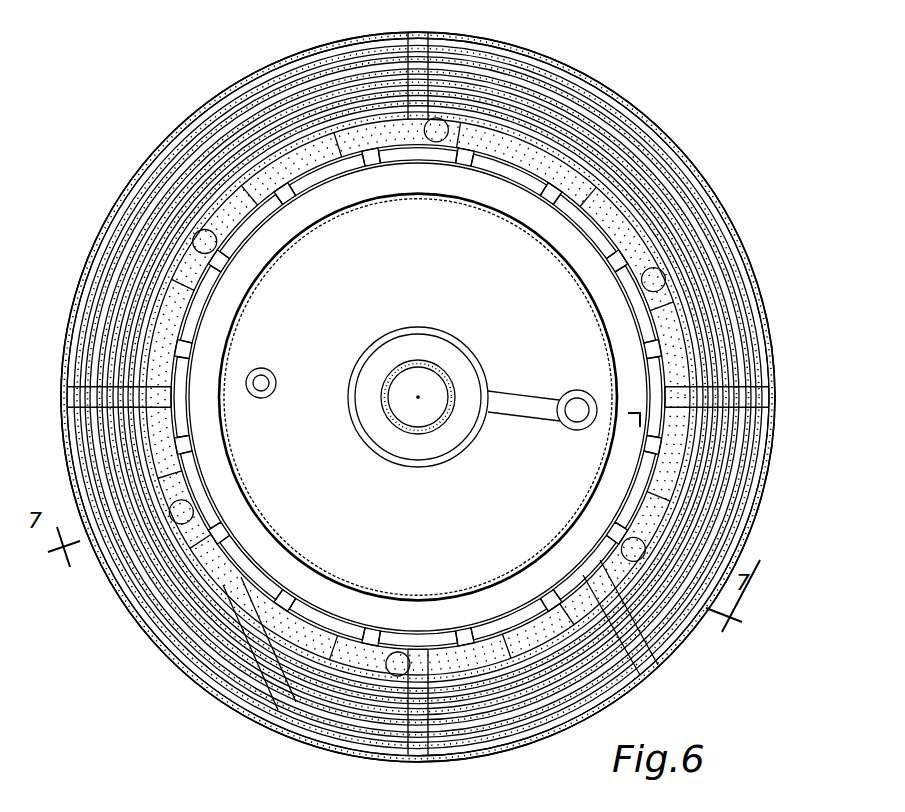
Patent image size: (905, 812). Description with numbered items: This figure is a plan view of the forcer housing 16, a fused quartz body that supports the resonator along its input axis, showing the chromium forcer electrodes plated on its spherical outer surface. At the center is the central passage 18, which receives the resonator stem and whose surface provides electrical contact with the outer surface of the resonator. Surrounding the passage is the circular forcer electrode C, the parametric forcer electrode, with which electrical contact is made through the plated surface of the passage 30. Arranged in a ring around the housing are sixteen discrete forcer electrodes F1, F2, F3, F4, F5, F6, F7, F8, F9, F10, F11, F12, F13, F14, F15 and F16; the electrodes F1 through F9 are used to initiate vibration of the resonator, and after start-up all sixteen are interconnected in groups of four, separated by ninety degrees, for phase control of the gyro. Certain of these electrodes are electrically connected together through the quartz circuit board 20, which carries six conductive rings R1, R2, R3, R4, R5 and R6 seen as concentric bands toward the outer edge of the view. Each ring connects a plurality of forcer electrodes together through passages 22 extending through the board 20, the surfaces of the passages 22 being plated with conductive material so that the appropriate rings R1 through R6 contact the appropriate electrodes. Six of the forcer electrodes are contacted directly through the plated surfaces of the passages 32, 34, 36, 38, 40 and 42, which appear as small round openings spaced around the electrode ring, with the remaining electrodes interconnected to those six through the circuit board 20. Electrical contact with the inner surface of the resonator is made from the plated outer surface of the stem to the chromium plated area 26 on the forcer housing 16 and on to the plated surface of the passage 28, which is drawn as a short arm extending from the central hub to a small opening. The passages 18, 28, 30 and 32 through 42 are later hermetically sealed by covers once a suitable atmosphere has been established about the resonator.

The forcer housing 16 is at (250, 85).
The central passage 18 is at (437, 388).
The quartz circuit board 20 is at (762, 332).
The passages 22 is at (528, 148).
The chromium plated area 26 is at (528, 403).
The passage 28 is at (574, 426).
The passage 30 is at (268, 382).
The passage 32 is at (192, 502).
The passage 34 is at (203, 252).
The passage 36 is at (424, 131).
The passage 38 is at (643, 290).
The passage 40 is at (624, 557).
The passage 42 is at (398, 652).
The circular forcer electrode C is at (400, 183).
The forcer electrode F1 is at (453, 153).
The forcer electrode F2 is at (520, 173).
The forcer electrode F3 is at (577, 227).
The forcer electrode F4 is at (640, 292).
The forcer electrode F5 is at (660, 387).
The forcer electrode F6 is at (647, 470).
The forcer electrode F7 is at (583, 578).
The forcer electrode F8 is at (487, 643).
The forcer electrode F9 is at (420, 640).
The forcer electrode F10 is at (307, 617).
The forcer electrode F11 is at (247, 567).
The forcer electrode F12 is at (203, 515).
The forcer electrode F13 is at (183, 422).
The forcer electrode F14 is at (190, 318).
The forcer electrode F15 is at (240, 232).
The forcer electrode F16 is at (310, 177).
The conductive ring R1 is at (455, 50).
The conductive ring R2 is at (491, 62).
The conductive ring R3 is at (520, 76).
The conductive ring R4 is at (540, 90).
The conductive ring R5 is at (563, 108).
The conductive ring R6 is at (592, 130).